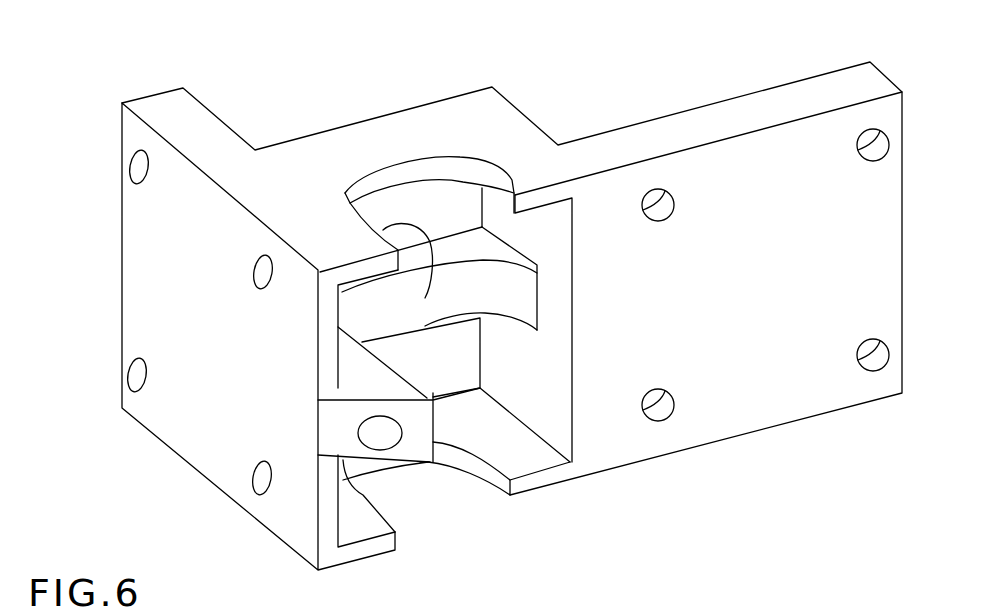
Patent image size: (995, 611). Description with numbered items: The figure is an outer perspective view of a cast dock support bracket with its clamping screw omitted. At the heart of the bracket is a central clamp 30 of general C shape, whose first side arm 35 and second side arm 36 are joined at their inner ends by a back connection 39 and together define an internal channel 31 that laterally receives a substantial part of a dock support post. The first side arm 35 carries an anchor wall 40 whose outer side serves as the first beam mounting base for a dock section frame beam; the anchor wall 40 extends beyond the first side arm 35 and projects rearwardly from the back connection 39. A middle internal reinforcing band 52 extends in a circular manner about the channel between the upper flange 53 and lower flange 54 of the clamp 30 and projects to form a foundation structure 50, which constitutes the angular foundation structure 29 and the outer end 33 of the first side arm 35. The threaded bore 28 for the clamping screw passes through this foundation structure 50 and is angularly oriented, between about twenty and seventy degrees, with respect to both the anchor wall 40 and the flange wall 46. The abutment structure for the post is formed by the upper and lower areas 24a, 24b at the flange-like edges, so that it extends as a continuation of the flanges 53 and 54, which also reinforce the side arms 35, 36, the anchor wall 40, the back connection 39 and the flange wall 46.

The upper abutment area 24a is at (512, 185).
The lower abutment area 24b is at (430, 463).
The threaded bore 28 is at (376, 428).
The angular foundation structure 29 is at (342, 437).
The central clamp 30 is at (490, 528).
The internal channel 31 is at (409, 505).
The outer end of first side arm 33 is at (420, 432).
The first side arm 35 is at (281, 374).
The second side arm 36 is at (526, 230).
The back connection 39 is at (379, 108).
The anchor wall 40 is at (204, 311).
The flange wall 46 is at (779, 343).
The foundation structure 50 is at (440, 400).
The middle internal reinforcing band 52 is at (385, 235).
The upper flange 53 is at (176, 108).
The lower flange 54 is at (540, 480).